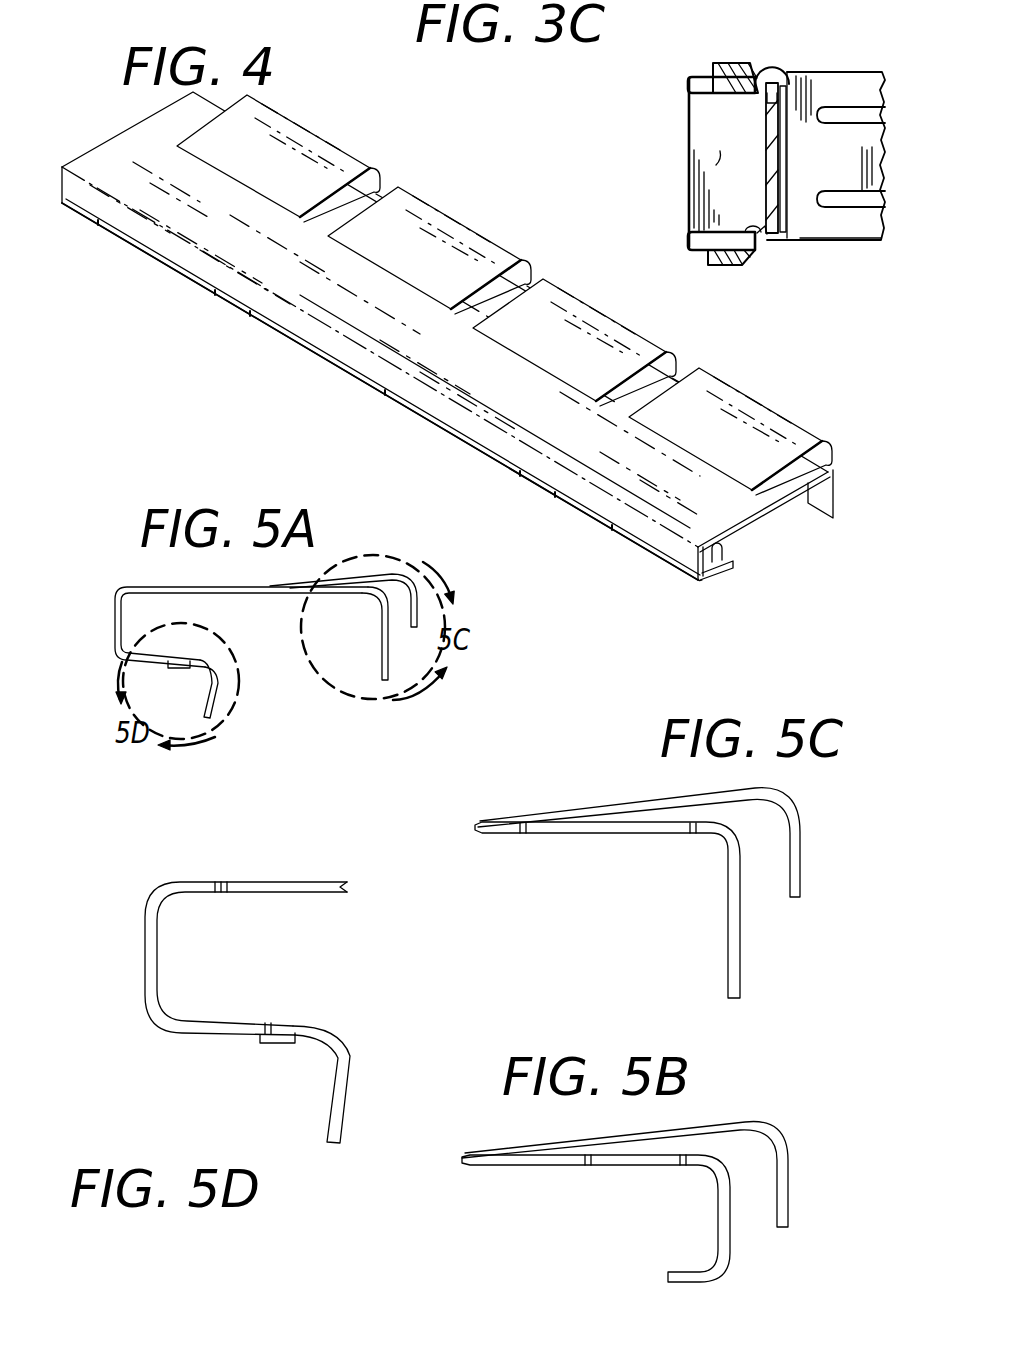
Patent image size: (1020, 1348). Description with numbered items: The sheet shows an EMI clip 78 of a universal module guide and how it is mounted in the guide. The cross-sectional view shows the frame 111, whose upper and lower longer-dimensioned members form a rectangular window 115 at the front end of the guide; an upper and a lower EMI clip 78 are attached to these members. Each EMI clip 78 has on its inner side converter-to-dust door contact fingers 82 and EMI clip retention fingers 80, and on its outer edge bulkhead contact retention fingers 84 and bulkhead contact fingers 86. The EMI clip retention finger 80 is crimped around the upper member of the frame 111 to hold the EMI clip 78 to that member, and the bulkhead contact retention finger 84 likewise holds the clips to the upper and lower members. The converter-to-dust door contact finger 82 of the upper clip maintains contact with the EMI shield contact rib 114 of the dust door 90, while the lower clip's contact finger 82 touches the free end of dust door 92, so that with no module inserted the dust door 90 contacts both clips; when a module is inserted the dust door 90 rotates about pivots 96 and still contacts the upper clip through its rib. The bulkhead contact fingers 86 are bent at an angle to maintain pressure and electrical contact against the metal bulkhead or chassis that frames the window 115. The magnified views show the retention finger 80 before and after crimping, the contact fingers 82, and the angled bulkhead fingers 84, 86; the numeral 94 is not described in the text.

In FIG. 4, the EMI clip 78 is at (226, 336).
In FIG. 3C, the EMI clip 78 is at (697, 100).
In FIG. 5A, the EMI clip 78 is at (110, 582).
In FIG. 4, the EMI clip retention finger 80 is at (340, 208).
In FIG. 3C, the EMI clip retention finger 80 is at (757, 72).
In FIG. 5A, the EMI clip retention finger 80 is at (382, 660).
In FIG. 5C, the EMI clip retention finger 80 is at (733, 944).
In FIG. 5B, the EMI clip retention finger 80 is at (703, 1266).
In FIG. 4, the converter-to-dust door contact finger 82 is at (573, 353).
In FIG. 3C, the converter-to-dust door contact finger 82 is at (770, 75).
In FIG. 5A, the converter-to-dust door contact finger 82 is at (418, 612).
In FIG. 5C, the converter-to-dust door contact finger 82 is at (797, 862).
In FIG. 5B, the converter-to-dust door contact finger 82 is at (782, 1158).
In FIG. 4, the bulkhead contact retention finger 84 is at (677, 567).
In FIG. 3C, the bulkhead contact retention finger 84 is at (715, 65).
In FIG. 5A, the bulkhead contact retention finger 84 is at (170, 668).
In FIG. 5D, the bulkhead contact retention finger 84 is at (260, 1037).
In FIG. 4, the bulkhead contact finger 86 is at (600, 521).
In FIG. 3C, the bulkhead contact finger 86 is at (688, 78).
In FIG. 5A, the bulkhead contact finger 86 is at (221, 707).
In FIG. 5D, the bulkhead contact finger 86 is at (350, 1090).
In FIG. 3C, the dust door 90 is at (793, 122).
In FIG. 3C, the free end of dust door 92 is at (780, 210).
In FIG. 3C, the housing wall 94 is at (868, 205).
In FIG. 3C, the pivots 96 is at (765, 63).
In FIG. 3C, the frame 111 is at (877, 75).
In FIG. 3C, the EMI shield contact rib 114 is at (768, 101).
In FIG. 3C, the window 115 is at (718, 165).